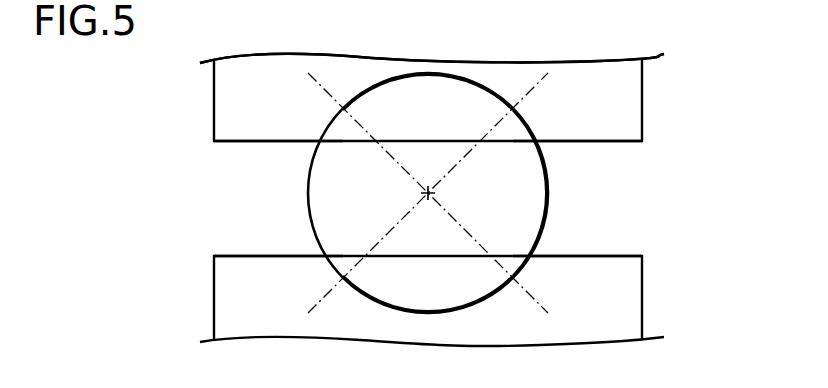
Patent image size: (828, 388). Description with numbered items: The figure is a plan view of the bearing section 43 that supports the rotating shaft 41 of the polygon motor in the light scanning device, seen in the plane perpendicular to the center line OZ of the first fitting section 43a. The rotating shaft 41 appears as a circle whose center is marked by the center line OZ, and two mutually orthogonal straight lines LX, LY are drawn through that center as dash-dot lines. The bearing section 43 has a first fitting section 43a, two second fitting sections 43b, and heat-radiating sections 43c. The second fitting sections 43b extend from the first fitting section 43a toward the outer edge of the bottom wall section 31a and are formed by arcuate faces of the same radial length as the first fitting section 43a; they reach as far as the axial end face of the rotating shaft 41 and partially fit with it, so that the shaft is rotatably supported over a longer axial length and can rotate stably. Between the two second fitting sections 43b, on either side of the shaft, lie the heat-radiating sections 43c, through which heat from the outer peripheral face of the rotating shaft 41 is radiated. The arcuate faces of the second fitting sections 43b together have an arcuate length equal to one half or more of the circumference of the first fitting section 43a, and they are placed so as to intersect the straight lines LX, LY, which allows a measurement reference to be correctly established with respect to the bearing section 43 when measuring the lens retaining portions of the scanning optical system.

The bearing section 43 is at (342, 79).
The first fitting section 43a is at (544, 166).
The second fitting sections 43b is at (472, 82).
The heat-radiating sections 43c is at (270, 193).
The bottom wall section 31a is at (243, 102).
The rotating shaft 41 is at (412, 287).
The straight line LX is at (385, 152).
The straight line LY is at (396, 227).
The center line OZ is at (435, 196).